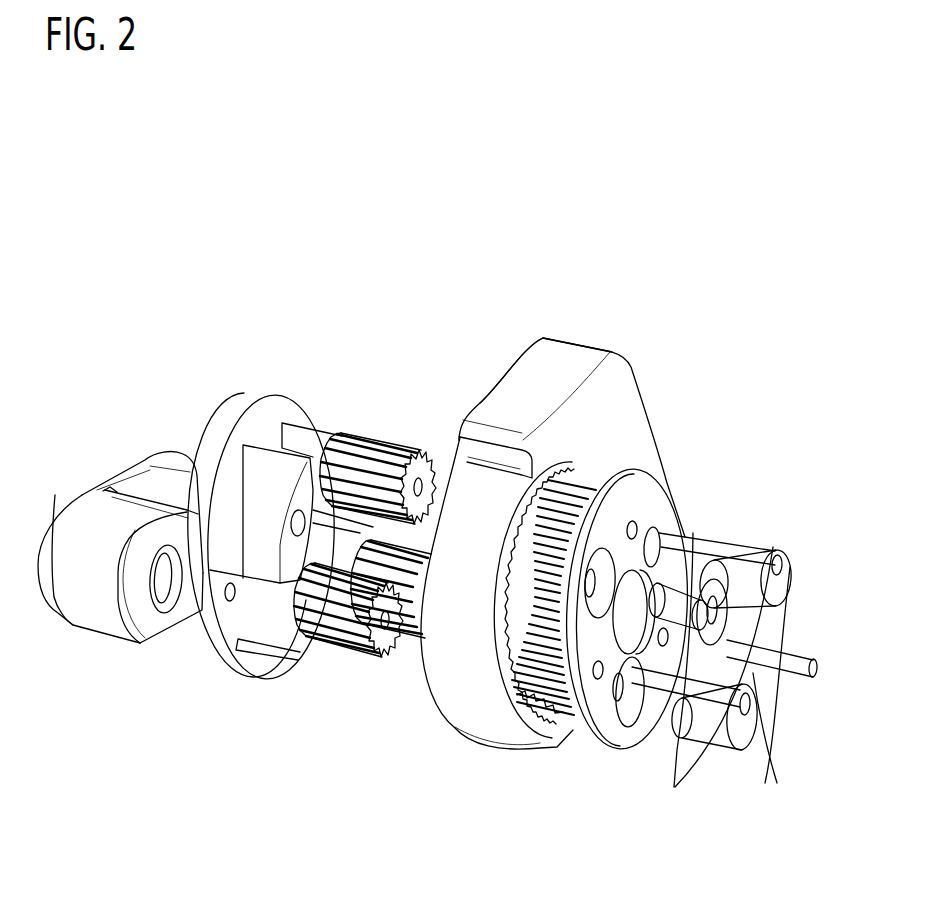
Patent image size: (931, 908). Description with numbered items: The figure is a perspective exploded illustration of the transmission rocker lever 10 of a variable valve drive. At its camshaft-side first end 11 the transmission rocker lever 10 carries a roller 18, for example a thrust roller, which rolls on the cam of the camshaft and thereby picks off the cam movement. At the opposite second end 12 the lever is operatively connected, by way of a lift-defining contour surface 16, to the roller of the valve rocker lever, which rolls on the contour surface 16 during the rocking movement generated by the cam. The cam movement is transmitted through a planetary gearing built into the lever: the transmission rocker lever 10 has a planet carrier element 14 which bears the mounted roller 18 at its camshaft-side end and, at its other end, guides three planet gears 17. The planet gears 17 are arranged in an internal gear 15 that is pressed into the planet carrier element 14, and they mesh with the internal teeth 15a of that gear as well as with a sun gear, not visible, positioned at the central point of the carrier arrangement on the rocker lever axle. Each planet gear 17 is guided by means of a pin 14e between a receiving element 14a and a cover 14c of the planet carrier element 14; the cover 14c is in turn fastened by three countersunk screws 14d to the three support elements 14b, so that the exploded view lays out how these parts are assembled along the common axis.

The transmission rocker lever 10 is at (447, 153).
The first end 11 is at (140, 610).
The second end 12 is at (567, 410).
The planet carrier element 14 is at (223, 355).
The receiving element 14a is at (243, 410).
The support element 14b is at (327, 455).
The cover 14c is at (578, 640).
The countersunk screw 14d is at (677, 610).
The pin 14e is at (745, 575).
The internal gear 15 is at (582, 477).
The internal teeth 15a is at (587, 480).
The contour surface 16 is at (539, 385).
The planet gear 17 is at (388, 472).
The roller 18 is at (88, 608).